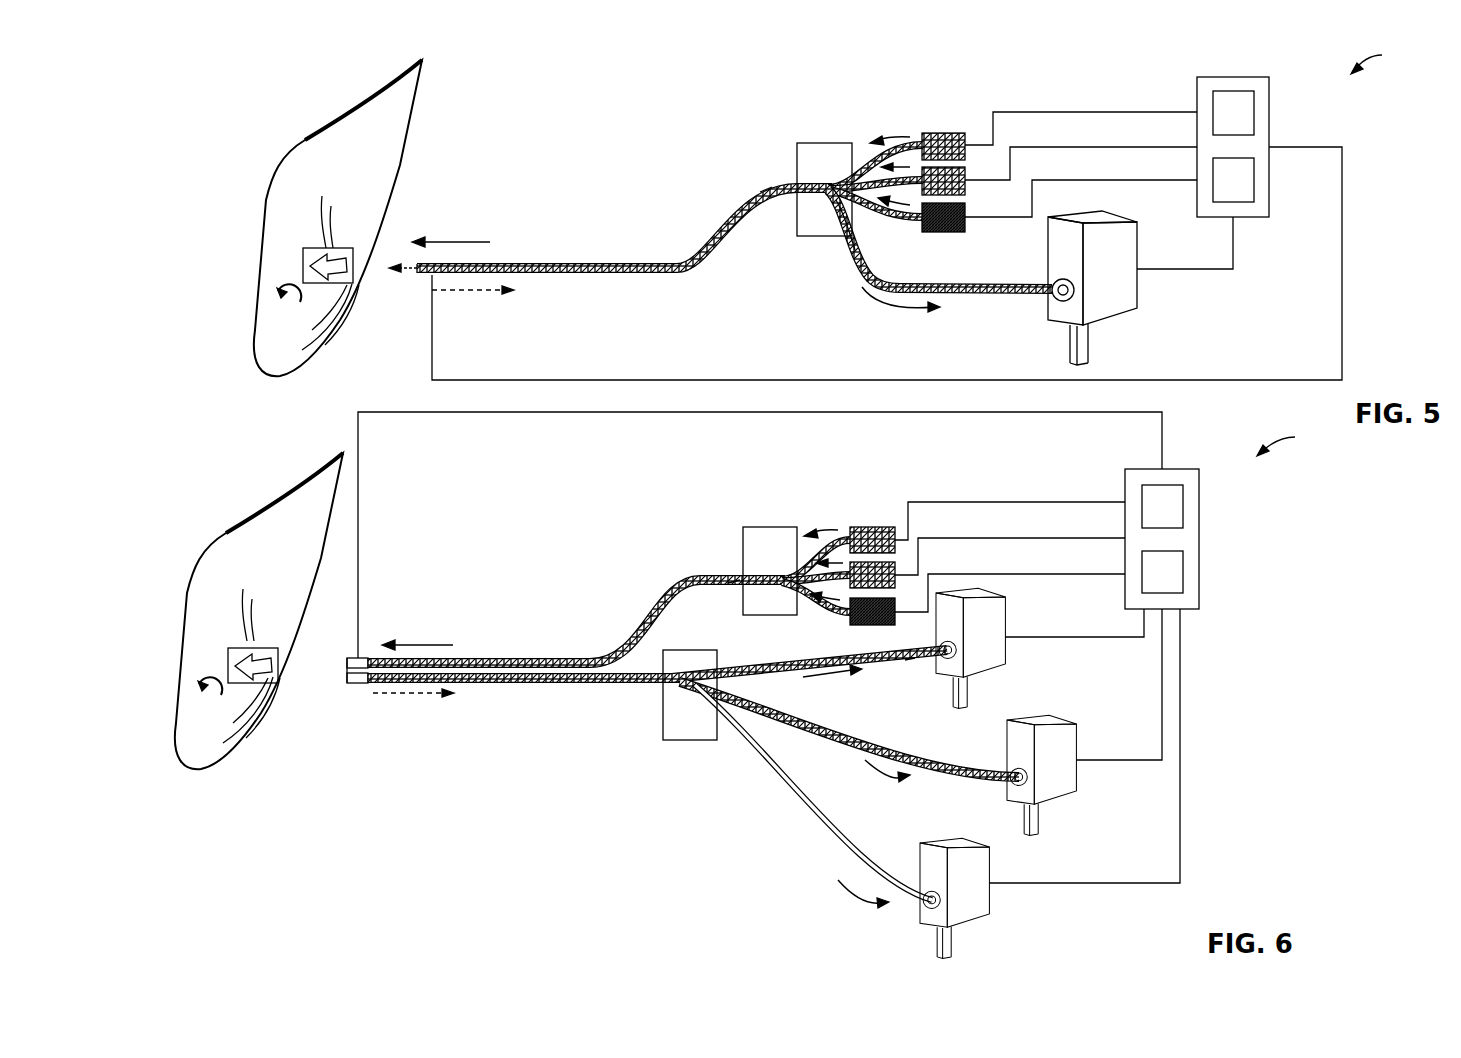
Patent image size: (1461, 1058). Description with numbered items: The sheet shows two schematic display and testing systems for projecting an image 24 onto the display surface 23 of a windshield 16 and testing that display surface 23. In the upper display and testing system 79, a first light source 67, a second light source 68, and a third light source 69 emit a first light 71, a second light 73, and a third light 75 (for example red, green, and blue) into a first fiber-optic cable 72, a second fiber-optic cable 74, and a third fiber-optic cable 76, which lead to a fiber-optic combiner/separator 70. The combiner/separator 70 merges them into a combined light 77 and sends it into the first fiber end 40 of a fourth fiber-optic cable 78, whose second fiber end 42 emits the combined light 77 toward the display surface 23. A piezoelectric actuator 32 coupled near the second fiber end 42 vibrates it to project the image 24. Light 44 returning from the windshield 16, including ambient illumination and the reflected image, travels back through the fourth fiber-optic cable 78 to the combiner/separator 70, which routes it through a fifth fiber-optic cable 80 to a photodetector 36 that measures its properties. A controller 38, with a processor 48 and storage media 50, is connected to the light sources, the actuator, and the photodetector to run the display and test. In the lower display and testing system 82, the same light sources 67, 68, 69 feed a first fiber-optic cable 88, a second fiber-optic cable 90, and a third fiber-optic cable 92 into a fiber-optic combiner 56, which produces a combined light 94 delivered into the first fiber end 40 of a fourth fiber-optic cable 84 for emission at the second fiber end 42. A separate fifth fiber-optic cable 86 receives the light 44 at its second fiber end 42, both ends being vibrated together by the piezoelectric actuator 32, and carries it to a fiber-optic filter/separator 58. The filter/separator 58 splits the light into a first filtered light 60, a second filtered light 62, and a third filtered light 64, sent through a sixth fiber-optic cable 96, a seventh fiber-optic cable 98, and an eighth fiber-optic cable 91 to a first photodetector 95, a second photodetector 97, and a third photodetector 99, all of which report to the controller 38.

In FIG. 5, the windshield 16 is at (408, 93).
In FIG. 6, the windshield 16 is at (342, 470).
In FIG. 5, the display surface 23 is at (270, 302).
In FIG. 6, the display surface 23 is at (192, 702).
In FIG. 5, the image 24 is at (303, 258).
In FIG. 6, the image 24 is at (228, 658).
In FIG. 5, the piezoelectric actuator 32 is at (420, 276).
In FIG. 6, the piezoelectric actuator 32 is at (352, 686).
In FIG. 5, the photodetector 36 is at (1135, 312).
In FIG. 5, the controller 38 is at (1251, 165).
In FIG. 6, the controller 38 is at (1197, 539).
In FIG. 5, the first fiber end 40 is at (766, 186).
In FIG. 6, the first fiber end 40 is at (730, 575).
In FIG. 5, the second fiber end 42 is at (440, 266).
In FIG. 6, the second fiber end 42 is at (380, 656).
In FIG. 5, the light 44 is at (470, 292).
In FIG. 6, the light 44 is at (407, 695).
In FIG. 5, the processor 48 is at (1233, 180).
In FIG. 6, the processor 48 is at (1162, 572).
In FIG. 5, the computer readable storage device or media 50 is at (1233, 113).
In FIG. 6, the computer readable storage device or media 50 is at (1162, 506).
In FIG. 6, the fiber-optic combiner 56 is at (770, 527).
In FIG. 6, the fiber-optic filter/separator 58 is at (688, 742).
In FIG. 6, the first filtered light 60 is at (830, 680).
In FIG. 6, the second filtered light 62 is at (875, 770).
In FIG. 6, the third filtered light 64 is at (850, 895).
In FIG. 5, the first light source 67 is at (958, 133).
In FIG. 6, the first light source 67 is at (887, 527).
In FIG. 5, the second light source 68 is at (975, 165).
In FIG. 6, the second light source 68 is at (897, 552).
In FIG. 5, the third light source 69 is at (968, 225).
In FIG. 6, the third light source 69 is at (900, 598).
In FIG. 5, the fiber-optic combiner/separator 70 is at (820, 143).
In FIG. 5, the first light 71 is at (884, 134).
In FIG. 6, the first light 71 is at (815, 530).
In FIG. 5, the first fiber-optic cable 72 is at (867, 152).
In FIG. 5, the second light 73 is at (903, 157).
In FIG. 6, the second light 73 is at (840, 556).
In FIG. 5, the second fiber-optic cable 74 is at (828, 235).
In FIG. 5, the third light 75 is at (870, 190).
In FIG. 6, the third light 75 is at (822, 600).
In FIG. 5, the third fiber-optic cable 76 is at (893, 212).
In FIG. 5, the combined light 77 is at (480, 238).
In FIG. 5, the fourth fiber-optic cable 78 is at (660, 273).
In FIG. 5, the display and testing system 79 is at (1381, 57).
In FIG. 5, the fifth fiber-optic cable 80 is at (1003, 292).
In FIG. 6, the display and testing system 82 is at (1290, 439).
In FIG. 6, the fourth fiber-optic cable 84 is at (535, 657).
In FIG. 6, the fifth fiber-optic cable 86 is at (582, 685).
In FIG. 6, the first fiber-optic cable 88 is at (805, 545).
In FIG. 6, the second fiber-optic cable 90 is at (795, 600).
In FIG. 6, the eighth fiber-optic cable 91 is at (780, 800).
In FIG. 6, the third fiber-optic cable 92 is at (858, 640).
In FIG. 6, the combined light 94 is at (440, 643).
In FIG. 6, the first photodetector 95 is at (1005, 650).
In FIG. 6, the sixth fiber-optic cable 96 is at (918, 660).
In FIG. 6, the second photodetector 97 is at (1080, 725).
In FIG. 6, the seventh fiber-optic cable 98 is at (858, 744).
In FIG. 6, the third photodetector 99 is at (988, 905).